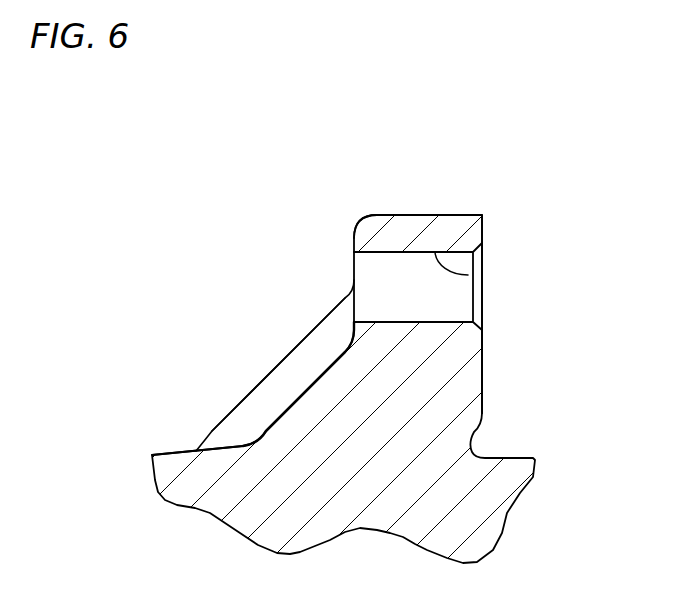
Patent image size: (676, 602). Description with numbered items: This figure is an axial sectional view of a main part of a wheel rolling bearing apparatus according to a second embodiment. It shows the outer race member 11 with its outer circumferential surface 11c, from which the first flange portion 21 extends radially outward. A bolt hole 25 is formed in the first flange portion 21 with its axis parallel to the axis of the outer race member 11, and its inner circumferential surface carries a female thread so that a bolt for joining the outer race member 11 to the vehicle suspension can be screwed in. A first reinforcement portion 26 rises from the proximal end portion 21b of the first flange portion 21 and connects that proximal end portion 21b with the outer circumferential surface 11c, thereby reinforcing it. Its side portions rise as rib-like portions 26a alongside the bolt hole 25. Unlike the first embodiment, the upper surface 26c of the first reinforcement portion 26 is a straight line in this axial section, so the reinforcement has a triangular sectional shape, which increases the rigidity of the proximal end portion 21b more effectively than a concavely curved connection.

The outer race member 11 is at (502, 477).
The outer circumferential surface 11c is at (167, 452).
The first flange portion 21 is at (435, 213).
The proximal end portion 21b is at (463, 385).
The bolt hole 25 is at (468, 275).
The first reinforcement portion 26 is at (248, 367).
The rib-like portions 26a is at (313, 360).
The upper surface 26c is at (280, 360).